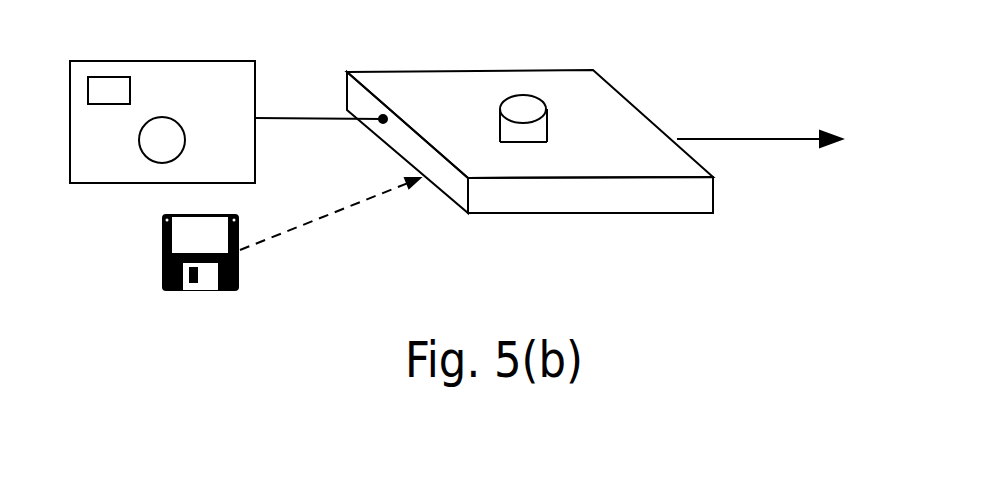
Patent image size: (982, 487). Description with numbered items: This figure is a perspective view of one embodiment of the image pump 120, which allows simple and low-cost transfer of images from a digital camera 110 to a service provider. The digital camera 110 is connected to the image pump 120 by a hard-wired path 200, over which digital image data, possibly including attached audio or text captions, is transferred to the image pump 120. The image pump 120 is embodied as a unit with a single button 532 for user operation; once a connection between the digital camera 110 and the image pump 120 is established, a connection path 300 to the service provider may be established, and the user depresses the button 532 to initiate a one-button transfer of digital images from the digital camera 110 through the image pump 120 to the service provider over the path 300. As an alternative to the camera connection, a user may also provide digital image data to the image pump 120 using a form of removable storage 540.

The digital camera 110 is at (160, 61).
The path 200 is at (308, 119).
The image pump 120 is at (585, 213).
The button 532 is at (530, 107).
The connection path 300 is at (770, 139).
The removable storage 540 is at (205, 290).